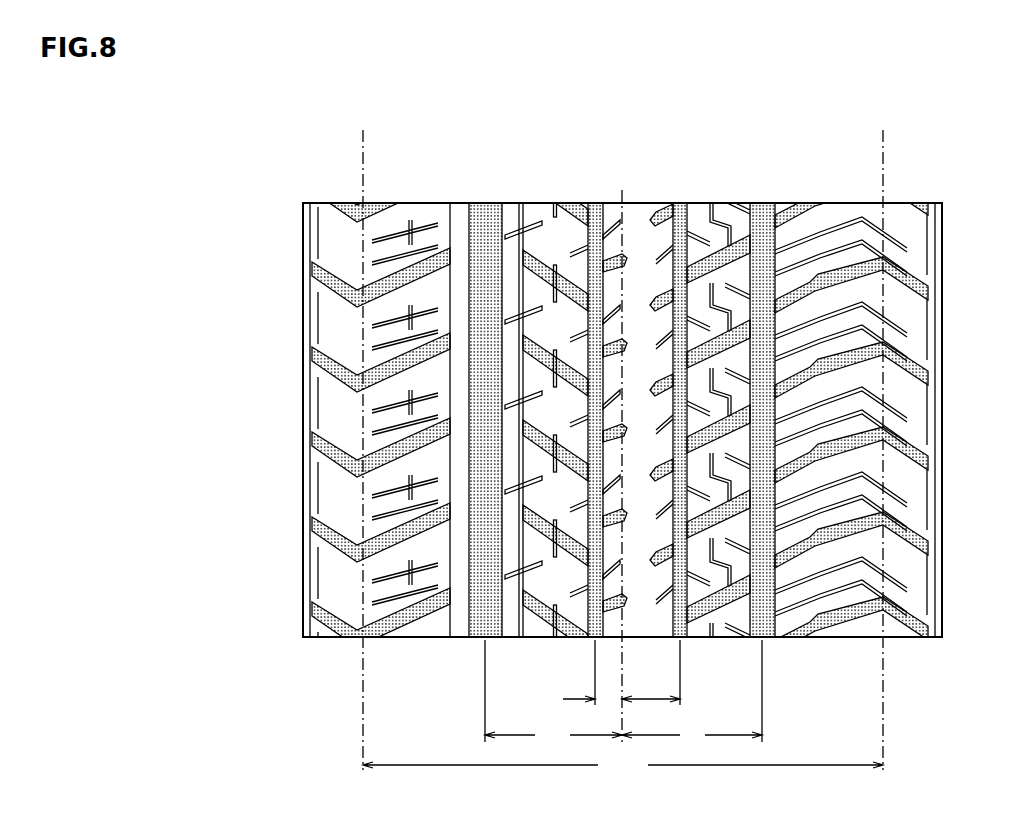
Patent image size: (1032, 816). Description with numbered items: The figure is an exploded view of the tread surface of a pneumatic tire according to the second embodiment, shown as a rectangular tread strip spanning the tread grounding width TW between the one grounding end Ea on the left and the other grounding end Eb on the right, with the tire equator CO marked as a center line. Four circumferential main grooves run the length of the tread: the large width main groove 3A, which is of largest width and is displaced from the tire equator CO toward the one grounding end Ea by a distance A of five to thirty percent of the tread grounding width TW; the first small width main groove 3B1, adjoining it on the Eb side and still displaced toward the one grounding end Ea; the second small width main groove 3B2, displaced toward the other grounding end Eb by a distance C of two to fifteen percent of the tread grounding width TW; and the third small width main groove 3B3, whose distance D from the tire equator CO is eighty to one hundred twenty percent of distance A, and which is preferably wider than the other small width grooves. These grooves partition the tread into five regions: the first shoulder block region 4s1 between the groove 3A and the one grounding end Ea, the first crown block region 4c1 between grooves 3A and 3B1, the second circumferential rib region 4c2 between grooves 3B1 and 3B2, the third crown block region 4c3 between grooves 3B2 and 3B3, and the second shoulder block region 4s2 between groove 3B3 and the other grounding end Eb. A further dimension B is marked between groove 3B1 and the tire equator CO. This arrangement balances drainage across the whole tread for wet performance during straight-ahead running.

The first shoulder block region 4s1 is at (469, 203).
The large width main groove 3A is at (483, 222).
The first crown block region 4c1 is at (588, 203).
The first small width main groove 3B1 is at (595, 222).
The second circumferential rib region 4c2 is at (603, 203).
The tire equator CO is at (623, 188).
The second small width main groove 3B2 is at (680, 218).
The third crown block region 4c3 is at (749, 203).
The third small width main groove 3B3 is at (758, 222).
The second shoulder block region 4s2 is at (774, 203).
The one grounding end Ea is at (363, 683).
The other grounding end Eb is at (883, 672).
The distance A is at (553, 735).
The distance B is at (589, 689).
The distance C is at (651, 689).
The distance D is at (692, 735).
The tread grounding width TW is at (623, 766).